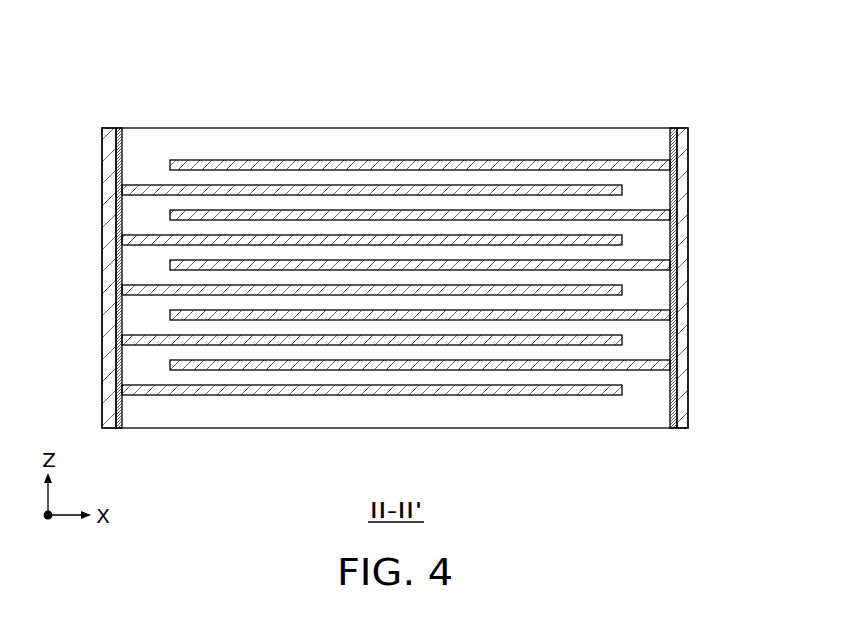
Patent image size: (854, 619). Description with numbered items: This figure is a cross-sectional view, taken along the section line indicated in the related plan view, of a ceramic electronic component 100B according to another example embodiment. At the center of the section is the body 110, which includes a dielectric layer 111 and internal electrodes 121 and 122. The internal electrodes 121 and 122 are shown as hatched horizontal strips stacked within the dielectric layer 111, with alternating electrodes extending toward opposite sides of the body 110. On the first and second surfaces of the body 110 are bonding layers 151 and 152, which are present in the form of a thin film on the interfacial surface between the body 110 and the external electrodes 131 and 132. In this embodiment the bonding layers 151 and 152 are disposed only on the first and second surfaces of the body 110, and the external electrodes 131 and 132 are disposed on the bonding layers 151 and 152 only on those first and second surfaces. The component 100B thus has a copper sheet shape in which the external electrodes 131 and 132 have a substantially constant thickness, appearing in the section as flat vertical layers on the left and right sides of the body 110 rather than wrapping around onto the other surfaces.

The ceramic electronic component 100B is at (548, 78).
The body 110 is at (460, 126).
The dielectric layer 111 is at (313, 150).
The internal electrode 121 is at (293, 390).
The internal electrode 122 is at (500, 364).
The external electrode 131 is at (107, 272).
The external electrode 132 is at (684, 272).
The bonding layer 151 is at (118, 317).
The bonding layer 152 is at (676, 317).